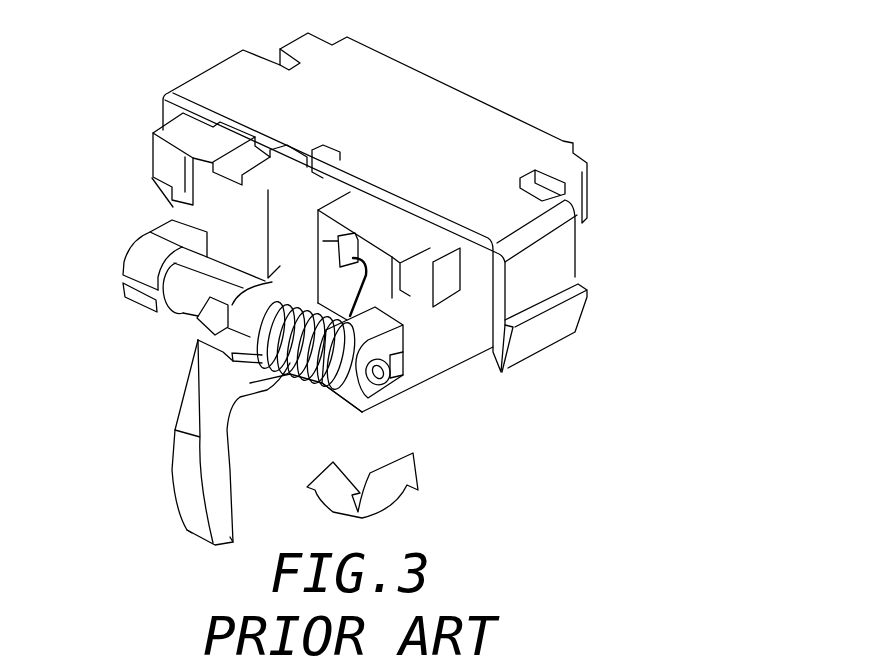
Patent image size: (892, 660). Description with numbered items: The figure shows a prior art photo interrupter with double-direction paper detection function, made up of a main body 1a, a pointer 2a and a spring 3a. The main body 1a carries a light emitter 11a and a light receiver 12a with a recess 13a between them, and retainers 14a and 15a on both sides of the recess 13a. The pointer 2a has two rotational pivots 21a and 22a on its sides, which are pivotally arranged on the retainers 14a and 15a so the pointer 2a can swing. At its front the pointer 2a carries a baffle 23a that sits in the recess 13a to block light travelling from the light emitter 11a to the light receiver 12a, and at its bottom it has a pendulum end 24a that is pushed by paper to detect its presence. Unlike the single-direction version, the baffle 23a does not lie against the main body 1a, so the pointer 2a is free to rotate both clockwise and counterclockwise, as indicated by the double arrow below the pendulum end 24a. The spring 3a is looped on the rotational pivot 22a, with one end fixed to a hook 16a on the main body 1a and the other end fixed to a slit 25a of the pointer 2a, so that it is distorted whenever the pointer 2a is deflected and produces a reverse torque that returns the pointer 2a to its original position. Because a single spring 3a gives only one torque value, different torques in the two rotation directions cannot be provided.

The main body 1a is at (462, 90).
The pointer 2a is at (180, 418).
The spring 3a is at (293, 377).
The light emitter 11a is at (178, 212).
The light receiver 12a is at (362, 282).
The recess 13a is at (330, 195).
The retainer 14a is at (137, 255).
The retainer 15a is at (382, 397).
The hook 16a is at (353, 243).
The rotational pivot 21a is at (185, 308).
The rotational pivot 22a is at (230, 376).
The baffle 23a is at (297, 245).
The pendulum end 24a is at (193, 518).
The slit 25a is at (232, 340).